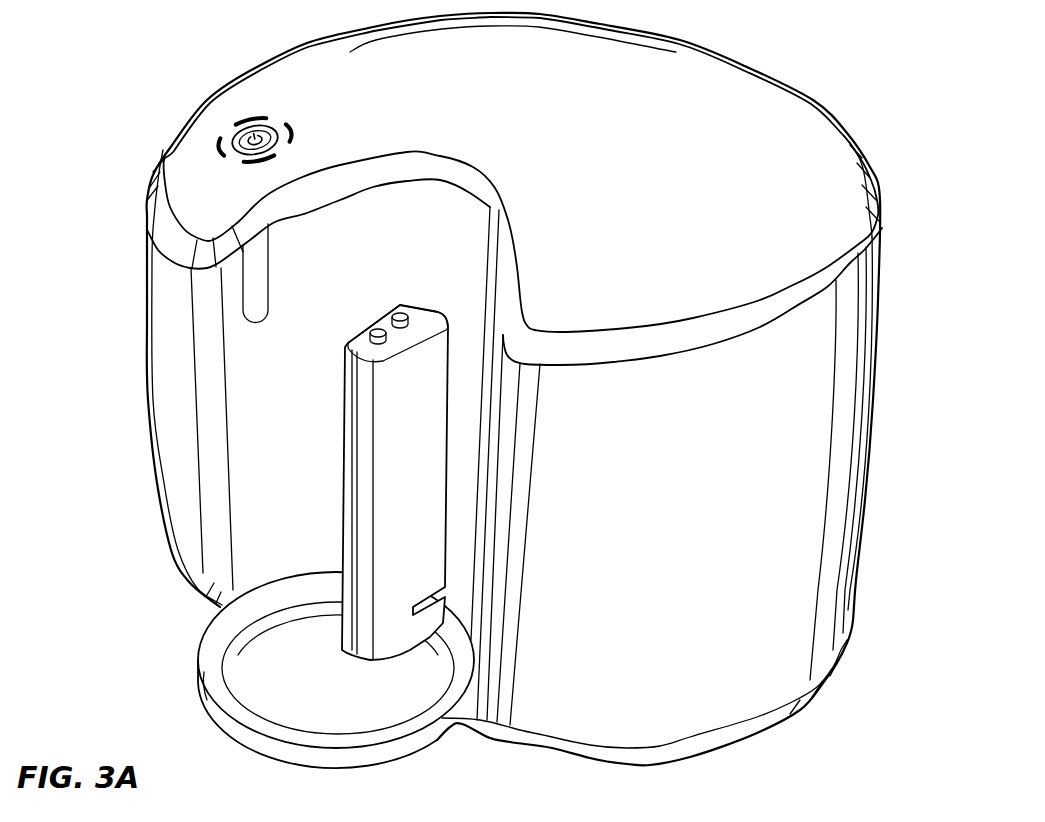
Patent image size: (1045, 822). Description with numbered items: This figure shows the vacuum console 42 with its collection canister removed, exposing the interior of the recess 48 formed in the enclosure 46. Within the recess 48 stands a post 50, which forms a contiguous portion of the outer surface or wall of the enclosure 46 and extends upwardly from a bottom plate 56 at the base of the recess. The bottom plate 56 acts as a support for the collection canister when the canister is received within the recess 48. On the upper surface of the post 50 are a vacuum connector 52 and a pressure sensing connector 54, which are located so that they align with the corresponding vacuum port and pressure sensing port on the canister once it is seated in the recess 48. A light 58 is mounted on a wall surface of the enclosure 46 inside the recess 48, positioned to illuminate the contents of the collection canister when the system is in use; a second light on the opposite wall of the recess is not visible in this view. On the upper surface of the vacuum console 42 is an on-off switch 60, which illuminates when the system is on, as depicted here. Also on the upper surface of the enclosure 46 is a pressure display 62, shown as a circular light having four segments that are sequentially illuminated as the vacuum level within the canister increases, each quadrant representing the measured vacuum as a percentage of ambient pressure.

The vacuum console 42 is at (802, 57).
The enclosure 46 is at (833, 513).
The recess 48 is at (270, 452).
The post 50 is at (377, 520).
The vacuum connector 52 is at (376, 332).
The pressure sensing connector 54 is at (398, 316).
The bottom plate 56 is at (255, 690).
The light 58 is at (250, 297).
The on-off switch 60 is at (223, 140).
The pressure display 62 is at (258, 127).